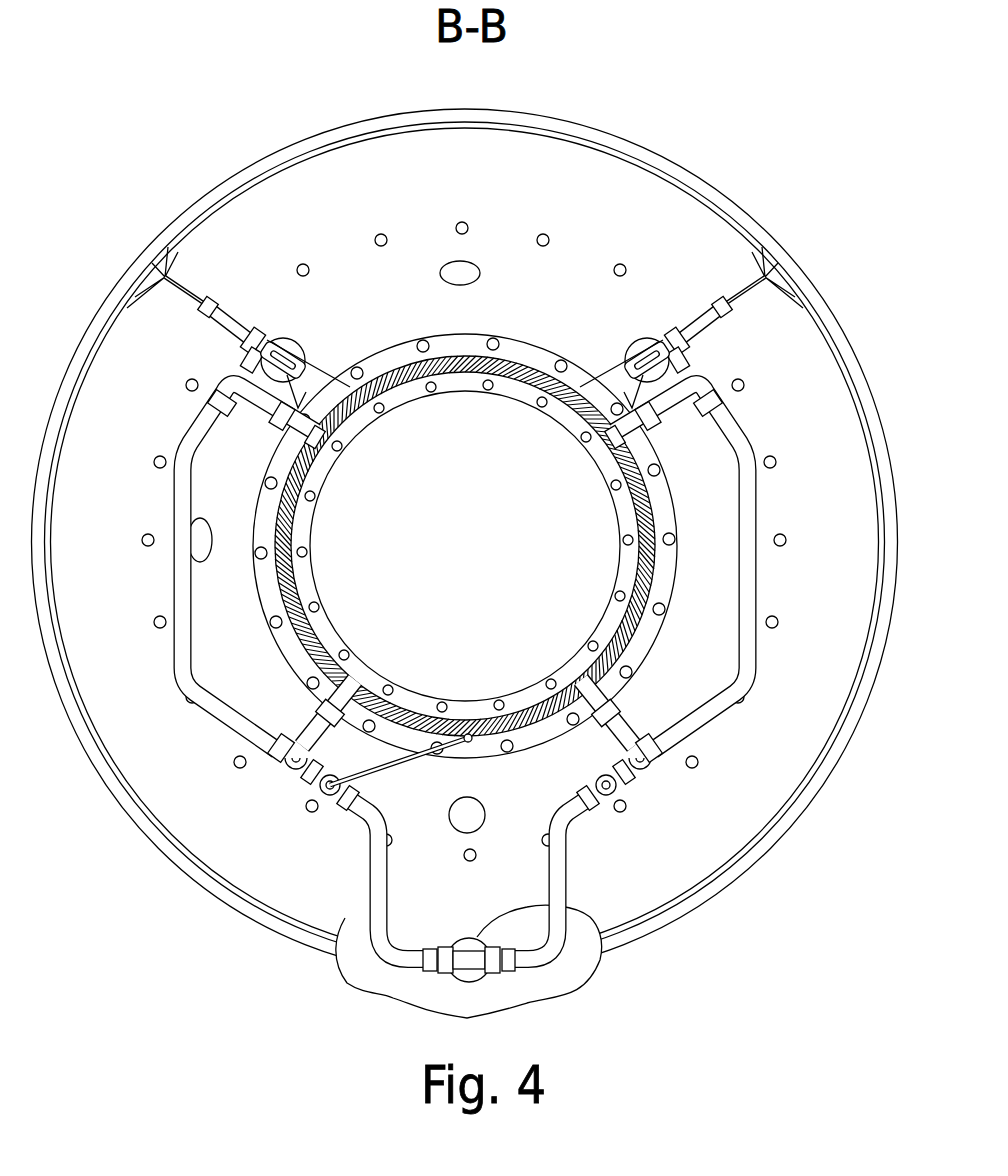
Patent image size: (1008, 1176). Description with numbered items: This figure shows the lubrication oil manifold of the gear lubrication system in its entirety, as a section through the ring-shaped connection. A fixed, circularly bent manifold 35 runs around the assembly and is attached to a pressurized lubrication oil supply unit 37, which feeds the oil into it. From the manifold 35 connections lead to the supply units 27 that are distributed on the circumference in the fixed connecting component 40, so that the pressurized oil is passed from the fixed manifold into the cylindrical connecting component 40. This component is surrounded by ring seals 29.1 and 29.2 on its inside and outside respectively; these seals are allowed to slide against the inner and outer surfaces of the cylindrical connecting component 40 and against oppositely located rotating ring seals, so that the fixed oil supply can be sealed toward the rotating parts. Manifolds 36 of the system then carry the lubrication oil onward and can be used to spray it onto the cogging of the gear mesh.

The supply units 27 is at (568, 665).
The ring seal 29.1 is at (622, 505).
The ring seal 29.2 is at (662, 503).
The manifold 35 is at (750, 598).
The manifold 36 is at (738, 270).
The pressurized lubrication oil supply unit 37 is at (565, 905).
The fixed connecting component 40 is at (625, 633).